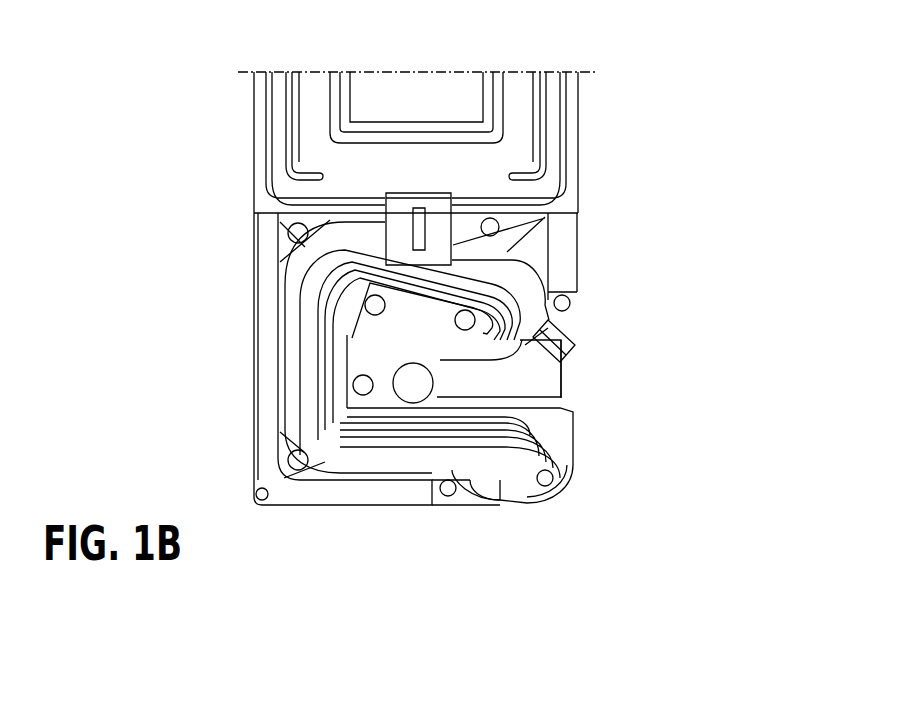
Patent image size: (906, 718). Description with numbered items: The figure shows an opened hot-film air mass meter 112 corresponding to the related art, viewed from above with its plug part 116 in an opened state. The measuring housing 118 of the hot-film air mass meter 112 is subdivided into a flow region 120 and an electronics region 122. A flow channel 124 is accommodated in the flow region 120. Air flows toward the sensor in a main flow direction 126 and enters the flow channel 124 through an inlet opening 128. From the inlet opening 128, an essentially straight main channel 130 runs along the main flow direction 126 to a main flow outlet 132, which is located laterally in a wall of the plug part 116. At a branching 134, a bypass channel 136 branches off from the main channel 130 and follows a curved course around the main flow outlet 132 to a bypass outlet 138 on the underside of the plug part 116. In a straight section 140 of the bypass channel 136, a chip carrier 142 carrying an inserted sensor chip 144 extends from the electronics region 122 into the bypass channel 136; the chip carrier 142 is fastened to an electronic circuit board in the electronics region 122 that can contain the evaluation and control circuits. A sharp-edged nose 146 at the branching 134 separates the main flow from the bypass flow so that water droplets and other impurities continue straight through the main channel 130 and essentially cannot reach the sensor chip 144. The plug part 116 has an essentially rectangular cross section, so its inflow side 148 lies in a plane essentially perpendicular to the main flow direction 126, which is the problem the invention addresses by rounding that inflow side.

The hot-film air mass meter 112 is at (615, 98).
The plug part 116 is at (226, 84).
The measuring housing 118 is at (253, 318).
The flow region 120 is at (203, 348).
The electronics region 122 is at (243, 155).
The flow channel 124 is at (303, 349).
The main flow direction 126 is at (594, 378).
The inlet opening 128 is at (570, 390).
The main channel 130 is at (498, 393).
The main flow outlet 132 is at (412, 380).
The branching 134 is at (568, 330).
The bypass channel 136 is at (318, 277).
The bypass outlet 138 is at (502, 478).
The straight section 140 is at (507, 262).
The chip carrier 142 is at (440, 212).
The sensor chip 144 is at (418, 222).
The sharp-edged nose 146 is at (548, 351).
The inflow side 148 is at (590, 428).